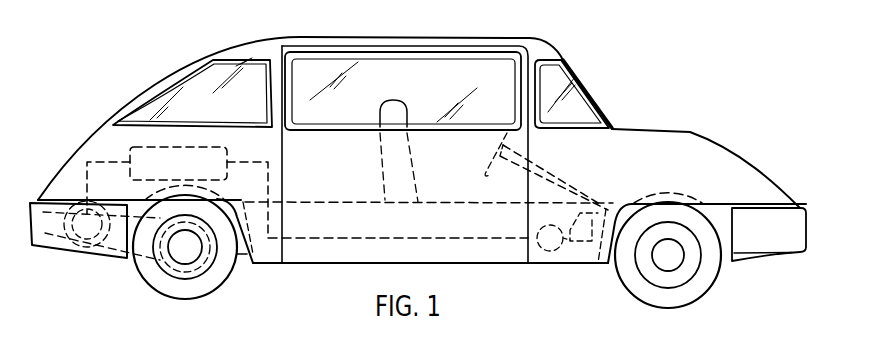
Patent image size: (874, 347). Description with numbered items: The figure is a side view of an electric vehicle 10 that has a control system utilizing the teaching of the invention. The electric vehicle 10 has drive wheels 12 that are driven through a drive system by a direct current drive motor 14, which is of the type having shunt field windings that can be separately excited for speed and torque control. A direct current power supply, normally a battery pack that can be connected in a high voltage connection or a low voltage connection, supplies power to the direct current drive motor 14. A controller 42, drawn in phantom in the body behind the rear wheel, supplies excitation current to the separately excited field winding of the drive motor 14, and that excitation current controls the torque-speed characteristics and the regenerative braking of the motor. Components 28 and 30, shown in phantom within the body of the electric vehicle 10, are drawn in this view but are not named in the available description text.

The electric vehicle 10 is at (646, 103).
The drive wheels 12 is at (222, 288).
The direct current drive motor 14 is at (78, 229).
The motor unit 28 is at (592, 221).
The frame member 30 is at (527, 221).
The controller 42 is at (229, 164).